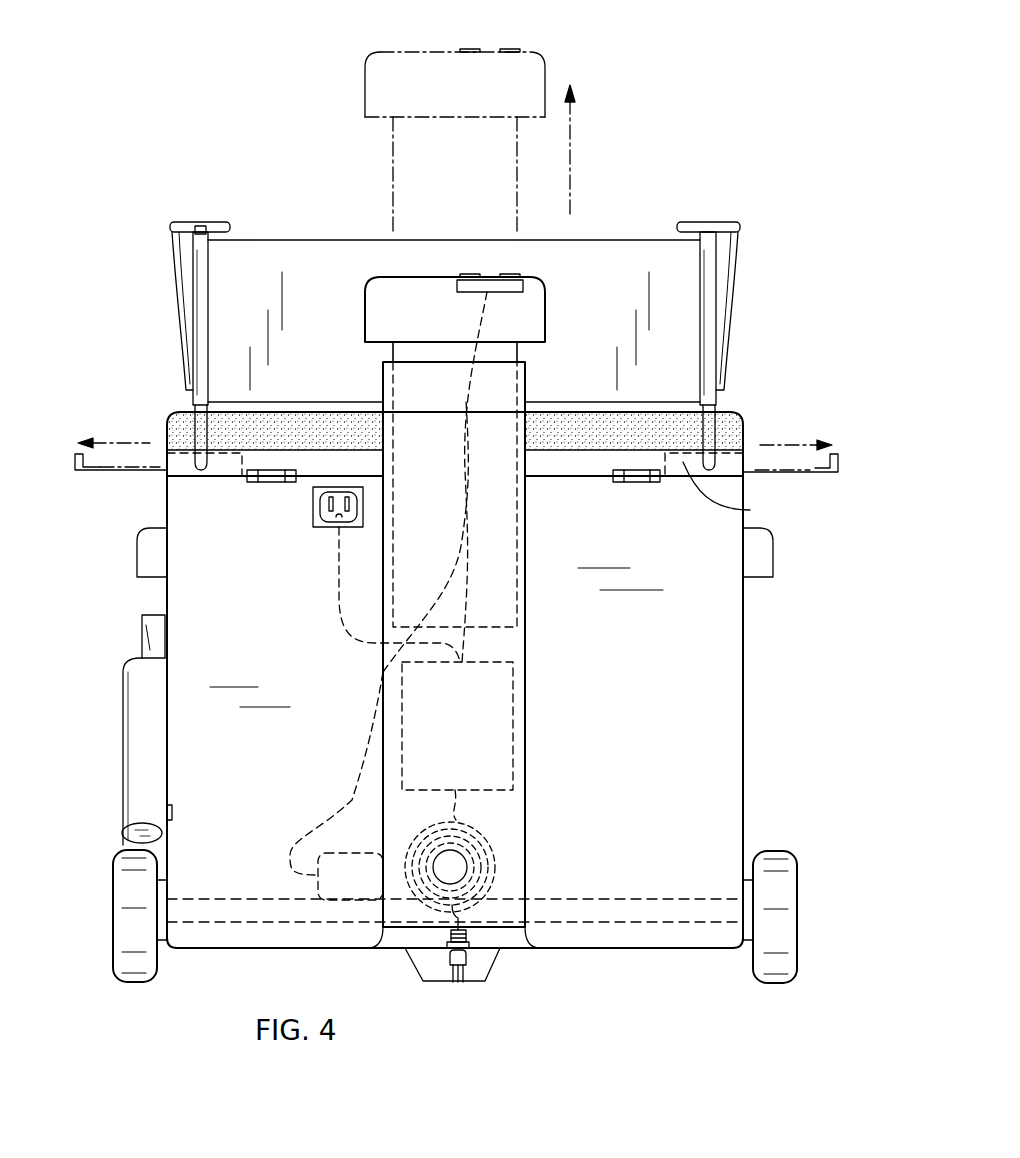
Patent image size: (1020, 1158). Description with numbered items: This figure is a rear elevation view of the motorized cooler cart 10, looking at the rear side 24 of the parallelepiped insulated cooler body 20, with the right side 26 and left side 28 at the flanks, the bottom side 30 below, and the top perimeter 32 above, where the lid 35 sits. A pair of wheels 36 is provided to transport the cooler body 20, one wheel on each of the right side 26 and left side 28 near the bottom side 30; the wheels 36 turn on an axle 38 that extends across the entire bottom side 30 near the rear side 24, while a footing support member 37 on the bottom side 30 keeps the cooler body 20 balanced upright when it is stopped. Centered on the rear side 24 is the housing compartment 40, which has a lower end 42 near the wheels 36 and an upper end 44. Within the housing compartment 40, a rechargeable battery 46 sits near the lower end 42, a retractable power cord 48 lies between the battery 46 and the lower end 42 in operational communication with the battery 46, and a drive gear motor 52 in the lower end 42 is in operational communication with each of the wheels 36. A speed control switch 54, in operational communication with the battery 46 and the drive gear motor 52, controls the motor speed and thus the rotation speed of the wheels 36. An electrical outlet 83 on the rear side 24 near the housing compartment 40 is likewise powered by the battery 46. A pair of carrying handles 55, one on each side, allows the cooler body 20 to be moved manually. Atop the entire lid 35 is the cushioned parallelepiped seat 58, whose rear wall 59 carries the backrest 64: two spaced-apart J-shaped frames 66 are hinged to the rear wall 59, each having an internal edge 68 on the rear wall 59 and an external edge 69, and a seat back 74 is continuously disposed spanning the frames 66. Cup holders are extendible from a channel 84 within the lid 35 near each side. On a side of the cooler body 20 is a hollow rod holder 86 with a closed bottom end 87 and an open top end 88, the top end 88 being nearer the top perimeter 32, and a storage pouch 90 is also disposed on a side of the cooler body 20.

The motorized cooler cart 10 is at (230, 150).
The insulated cooler body 20 is at (740, 950).
The rear side 24 is at (722, 718).
The right side 26 is at (167, 592).
The left side 28 is at (745, 625).
The bottom side 30 is at (607, 950).
The top perimeter 32 is at (196, 477).
The lid 35 is at (182, 454).
The wheels 36 is at (120, 915).
The footing support member 37 is at (485, 963).
The axle 38 is at (197, 913).
The housing compartment 40 is at (527, 880).
The lower end 42 is at (530, 933).
The upper end 44 is at (525, 362).
The rechargeable battery 46 is at (505, 745).
The retractable power cord 48 is at (425, 880).
The drive gear motor 52 is at (347, 890).
The speed control switch 54 is at (523, 285).
The carrying handles 55 is at (137, 553).
The cushioned parallelepiped seat 58 is at (740, 415).
The rear wall 59 is at (742, 432).
The backrest 64 is at (172, 222).
The J-shaped frames 66 is at (200, 425).
The internal edge 68 is at (195, 470).
The external edge 69 is at (198, 225).
The seat back 74 is at (278, 245).
The electrical outlet 83 is at (313, 510).
The channel 84 is at (736, 494).
The hollow rod holder 86 is at (123, 800).
The closed bottom end 87 is at (125, 833).
The open top end 88 is at (125, 663).
The storage pouch 90 is at (142, 628).